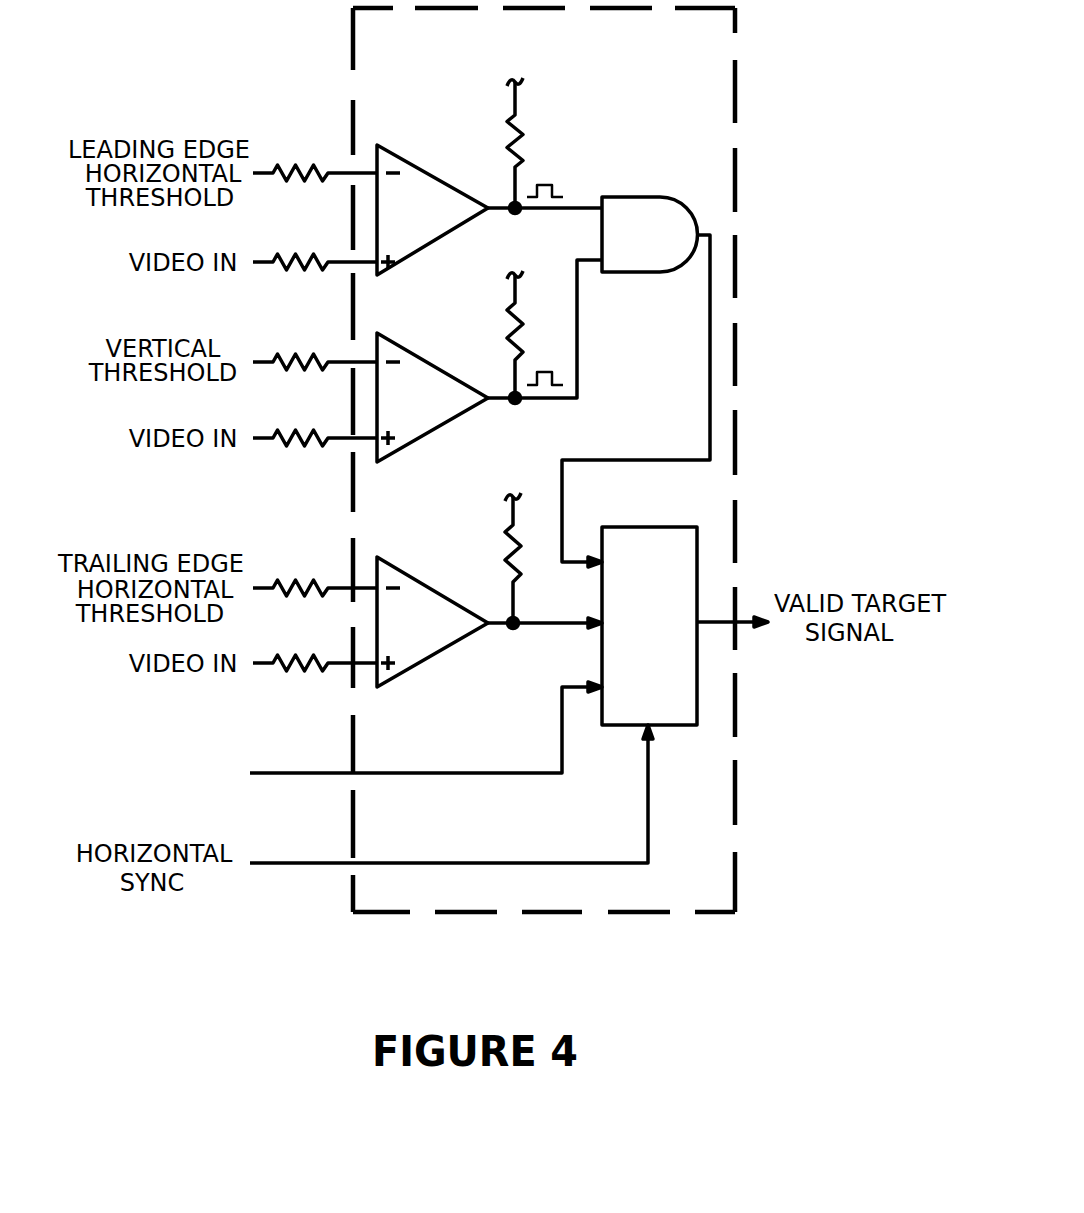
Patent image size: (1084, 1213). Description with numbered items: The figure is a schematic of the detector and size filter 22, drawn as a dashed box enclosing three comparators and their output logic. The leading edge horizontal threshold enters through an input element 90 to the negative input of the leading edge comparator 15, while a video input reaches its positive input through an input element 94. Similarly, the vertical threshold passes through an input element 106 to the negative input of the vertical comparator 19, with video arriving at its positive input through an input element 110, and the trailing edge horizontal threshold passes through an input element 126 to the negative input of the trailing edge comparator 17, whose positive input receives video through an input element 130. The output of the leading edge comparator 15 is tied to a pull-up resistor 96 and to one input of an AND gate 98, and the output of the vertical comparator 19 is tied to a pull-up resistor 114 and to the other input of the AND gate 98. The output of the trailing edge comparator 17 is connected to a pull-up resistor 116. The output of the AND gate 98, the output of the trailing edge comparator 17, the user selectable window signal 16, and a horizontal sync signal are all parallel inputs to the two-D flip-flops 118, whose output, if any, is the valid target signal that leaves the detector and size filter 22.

The leading edge horizontal threshold input resistor 90 is at (300, 170).
The video input resistor 94 is at (297, 257).
The leading edge comparator 15 is at (418, 250).
The pull-up resistor 96 is at (520, 135).
The AND gate 98 is at (635, 197).
The vertical threshold input resistor 106 is at (297, 357).
The video input resistor 110 is at (300, 432).
The vertical comparator 19 is at (440, 427).
The pull-up resistor 114 is at (505, 313).
The trailing edge horizontal threshold input resistor 126 is at (295, 582).
The video input resistor 130 is at (305, 670).
The trailing edge comparator 17 is at (430, 657).
The pull-up resistor 116 is at (503, 540).
The 2-D flip-flops 118 is at (678, 525).
The user selectable window signal 16 is at (285, 772).
The detector and size filter 22 is at (643, 915).